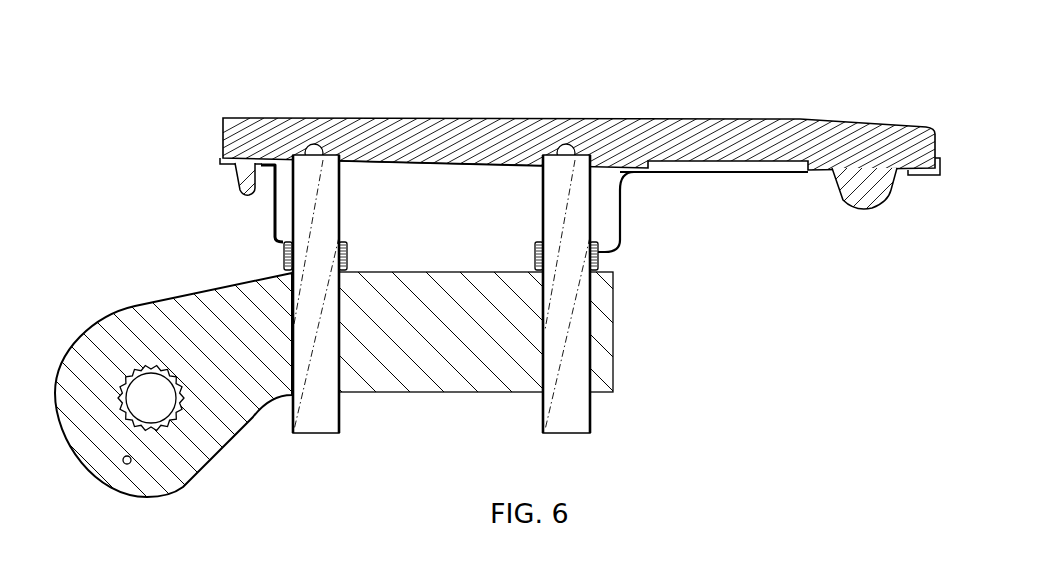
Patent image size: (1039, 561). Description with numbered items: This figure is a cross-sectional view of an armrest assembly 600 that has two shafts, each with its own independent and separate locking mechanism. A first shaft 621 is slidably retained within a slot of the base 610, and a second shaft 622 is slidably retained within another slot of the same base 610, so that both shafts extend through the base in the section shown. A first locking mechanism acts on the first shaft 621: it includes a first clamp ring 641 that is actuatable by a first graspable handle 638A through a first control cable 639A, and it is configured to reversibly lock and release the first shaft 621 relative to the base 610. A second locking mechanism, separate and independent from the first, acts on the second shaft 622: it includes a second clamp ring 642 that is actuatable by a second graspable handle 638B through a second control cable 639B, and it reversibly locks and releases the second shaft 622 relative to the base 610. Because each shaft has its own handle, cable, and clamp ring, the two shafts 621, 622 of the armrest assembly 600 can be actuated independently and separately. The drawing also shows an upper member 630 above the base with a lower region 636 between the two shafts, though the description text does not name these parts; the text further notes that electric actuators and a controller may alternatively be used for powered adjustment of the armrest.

The armrest assembly 600 is at (75, 62).
The base 610 is at (428, 384).
The first shaft 621 is at (580, 416).
The second shaft 622 is at (321, 413).
The plate 630 is at (238, 137).
The lower surface of plate 636 is at (440, 166).
The first graspable handle 638A is at (886, 200).
The second graspable handle 638B is at (238, 190).
The first control cable 639A is at (658, 176).
The second control cable 639B is at (277, 208).
The first clamp ring 641 is at (536, 252).
The second clamp ring 642 is at (285, 255).